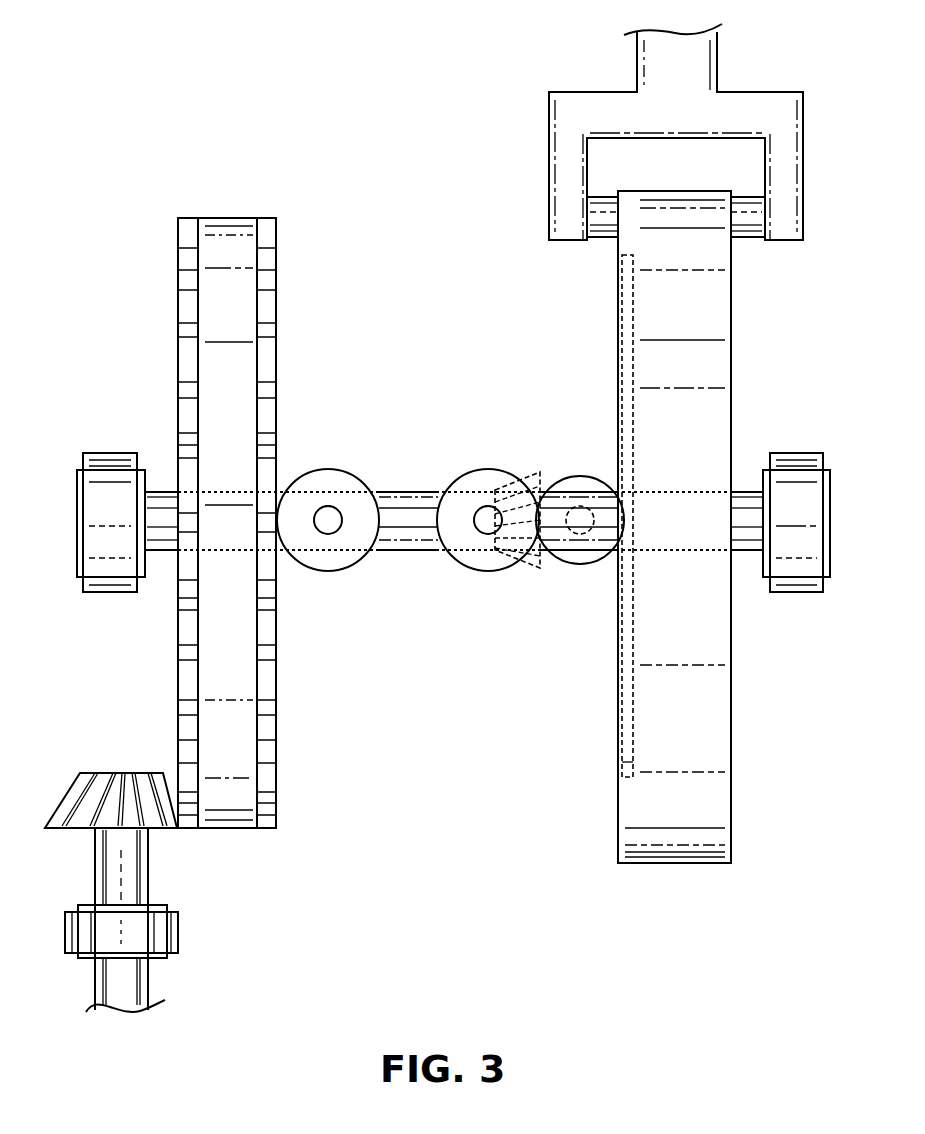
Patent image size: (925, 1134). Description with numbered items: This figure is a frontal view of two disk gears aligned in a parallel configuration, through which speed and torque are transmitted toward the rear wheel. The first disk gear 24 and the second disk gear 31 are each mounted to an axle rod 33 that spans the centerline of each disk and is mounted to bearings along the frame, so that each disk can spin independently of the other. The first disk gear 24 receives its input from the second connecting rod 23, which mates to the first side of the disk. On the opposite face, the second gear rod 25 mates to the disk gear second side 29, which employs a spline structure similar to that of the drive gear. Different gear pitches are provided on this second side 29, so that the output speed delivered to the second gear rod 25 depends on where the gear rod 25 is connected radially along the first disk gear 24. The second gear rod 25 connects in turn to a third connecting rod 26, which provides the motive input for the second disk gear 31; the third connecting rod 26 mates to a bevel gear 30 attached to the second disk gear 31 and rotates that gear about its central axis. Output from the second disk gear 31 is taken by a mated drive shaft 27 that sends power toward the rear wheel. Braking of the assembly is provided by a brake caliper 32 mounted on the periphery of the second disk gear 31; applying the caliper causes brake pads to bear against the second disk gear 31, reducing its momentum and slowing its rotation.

The second connecting rod 23 is at (62, 870).
The first disk gear 24 is at (219, 305).
The second gear rod 25 is at (355, 466).
The third connecting rod 26 is at (460, 466).
The drive shaft 27 is at (581, 588).
The disk gear second side 29 is at (277, 717).
The bevel gear 30 is at (538, 470).
The second disk gear 31 is at (715, 344).
The brake caliper 32 is at (580, 66).
The axle rod 33 is at (411, 533).